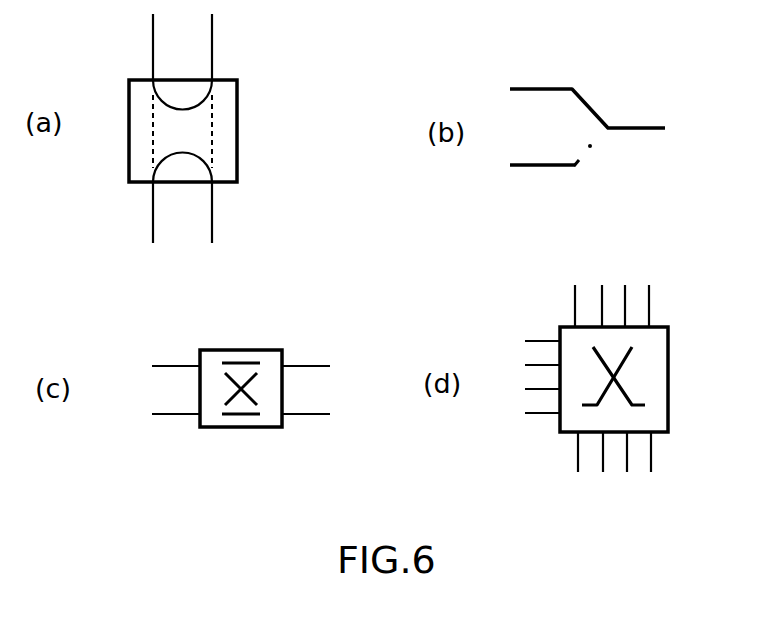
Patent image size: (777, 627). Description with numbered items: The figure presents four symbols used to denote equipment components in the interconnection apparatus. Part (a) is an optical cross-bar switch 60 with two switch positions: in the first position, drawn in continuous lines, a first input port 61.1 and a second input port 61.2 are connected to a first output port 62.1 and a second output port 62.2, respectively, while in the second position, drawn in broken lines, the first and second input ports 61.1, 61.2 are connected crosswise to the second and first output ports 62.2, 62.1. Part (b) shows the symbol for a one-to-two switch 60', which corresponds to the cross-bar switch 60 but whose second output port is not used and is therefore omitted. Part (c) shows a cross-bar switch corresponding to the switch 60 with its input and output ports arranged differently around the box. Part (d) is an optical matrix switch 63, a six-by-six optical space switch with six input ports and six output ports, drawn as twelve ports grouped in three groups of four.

The optical cross-bar switch 60 is at (210, 126).
The (1:2) switch 60' is at (587, 98).
The first input port 61.1 is at (243, 29).
The second input port 61.2 is at (153, 210).
The first output port 62.1 is at (151, 47).
The second output port 62.2 is at (212, 210).
The optical matrix switch 63 is at (668, 375).